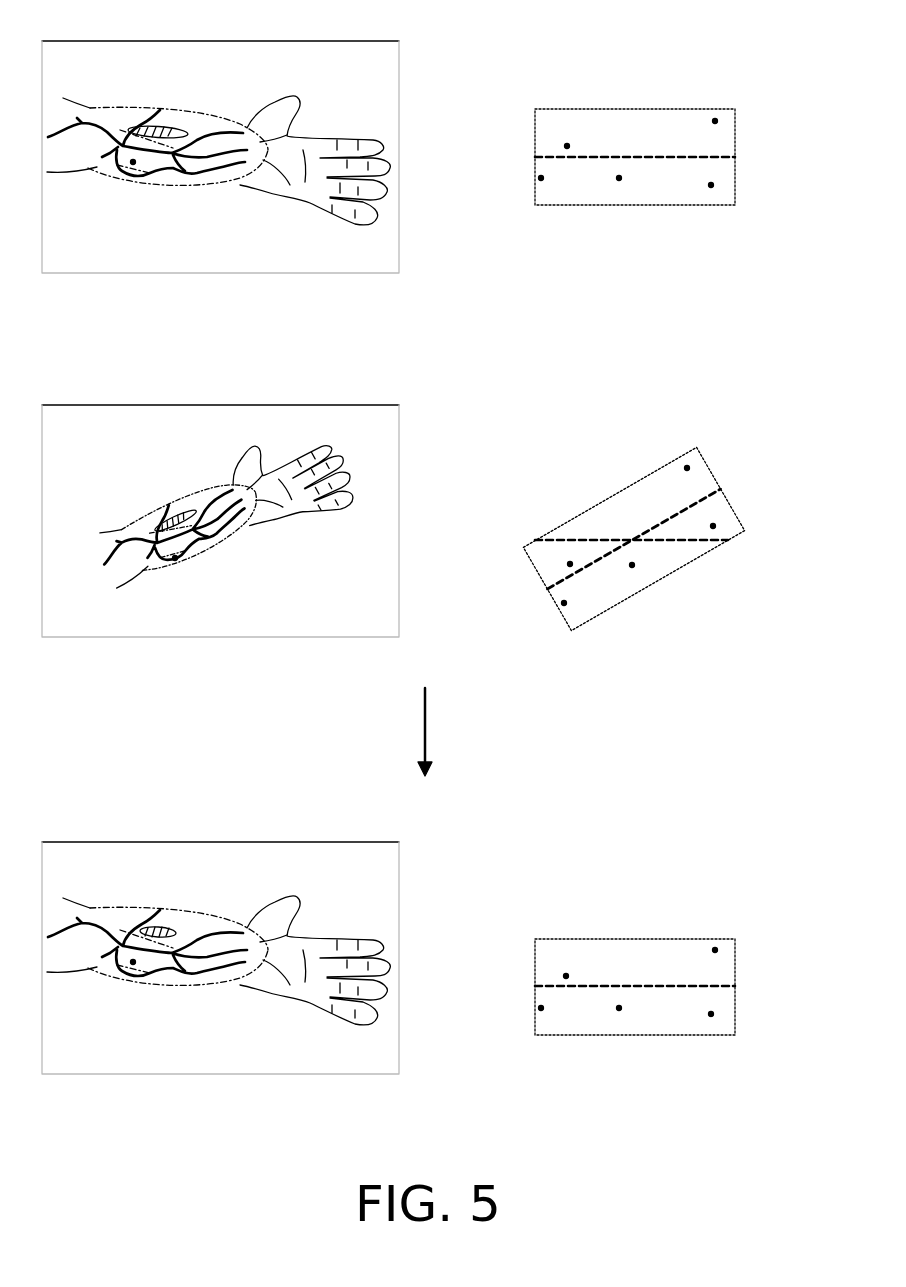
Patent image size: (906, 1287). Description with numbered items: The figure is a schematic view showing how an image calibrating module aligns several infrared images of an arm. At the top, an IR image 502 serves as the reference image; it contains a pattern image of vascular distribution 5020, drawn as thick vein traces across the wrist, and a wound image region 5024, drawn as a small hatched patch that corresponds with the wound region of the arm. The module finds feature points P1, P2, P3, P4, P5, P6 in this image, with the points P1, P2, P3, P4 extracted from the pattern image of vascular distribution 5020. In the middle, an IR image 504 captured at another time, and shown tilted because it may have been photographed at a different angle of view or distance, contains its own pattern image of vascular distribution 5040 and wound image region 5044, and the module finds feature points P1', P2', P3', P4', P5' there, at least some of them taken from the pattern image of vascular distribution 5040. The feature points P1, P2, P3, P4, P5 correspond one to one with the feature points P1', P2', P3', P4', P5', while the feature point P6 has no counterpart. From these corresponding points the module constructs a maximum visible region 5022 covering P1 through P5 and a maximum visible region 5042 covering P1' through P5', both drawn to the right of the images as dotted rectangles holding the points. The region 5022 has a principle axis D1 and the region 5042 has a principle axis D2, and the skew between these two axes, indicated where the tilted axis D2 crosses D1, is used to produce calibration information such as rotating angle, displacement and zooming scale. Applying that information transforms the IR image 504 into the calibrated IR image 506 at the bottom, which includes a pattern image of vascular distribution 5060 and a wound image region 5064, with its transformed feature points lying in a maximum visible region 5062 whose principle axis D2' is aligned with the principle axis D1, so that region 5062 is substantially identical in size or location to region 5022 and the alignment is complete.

The IR image 502 is at (292, 40).
The pattern image of vascular distribution 5020 is at (247, 128).
The maximum visible region 5022 is at (122, 200).
The wound image region 5024 is at (170, 125).
The IR image 504 is at (292, 404).
The pattern image of vascular distribution 5040 is at (226, 500).
The maximum visible region 5042 is at (150, 530).
The wound image region 5044 is at (178, 527).
The IR image 506 is at (292, 841).
The pattern image of vascular distribution 5060 is at (247, 928).
The maximum visible region 5062 is at (122, 1000).
The wound image region 5064 is at (170, 925).
The principle axis D1 is at (725, 155).
The principle axis D2 is at (655, 522).
The principle axis D2' is at (662, 970).
The feature point P1 is at (353, 191).
The feature point P2 is at (441, 167).
The feature point P3 is at (331, 189).
The feature point P4 is at (427, 212).
The feature point P5 is at (379, 208).
The feature point P6 is at (88, 128).
The feature point P1' is at (363, 590).
The feature point P2' is at (447, 519).
The feature point P3' is at (342, 605).
The feature point P4' is at (458, 560).
The feature point P5' is at (420, 599).